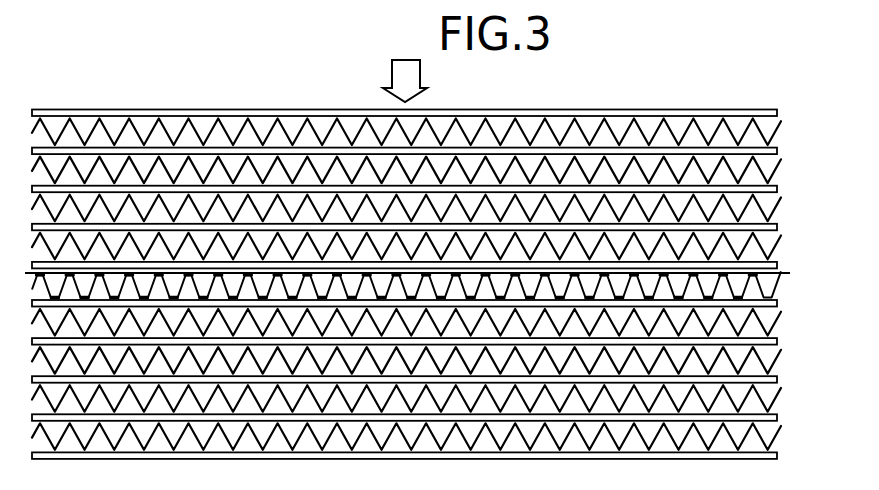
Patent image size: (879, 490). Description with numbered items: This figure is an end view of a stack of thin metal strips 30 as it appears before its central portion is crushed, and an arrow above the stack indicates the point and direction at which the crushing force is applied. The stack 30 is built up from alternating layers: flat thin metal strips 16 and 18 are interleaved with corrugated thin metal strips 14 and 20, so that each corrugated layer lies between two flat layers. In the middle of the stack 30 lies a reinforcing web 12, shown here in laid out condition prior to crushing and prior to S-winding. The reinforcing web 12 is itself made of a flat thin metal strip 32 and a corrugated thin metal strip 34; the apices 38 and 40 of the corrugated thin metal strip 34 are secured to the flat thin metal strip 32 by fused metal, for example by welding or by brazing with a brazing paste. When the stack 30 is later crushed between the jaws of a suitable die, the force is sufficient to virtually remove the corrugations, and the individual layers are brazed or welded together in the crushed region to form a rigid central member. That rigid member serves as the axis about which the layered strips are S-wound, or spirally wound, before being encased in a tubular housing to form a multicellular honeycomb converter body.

The stack of thin metal strips 30 is at (519, 98).
The flat thin metal strip 16 is at (277, 115).
The corrugated thin metal strip 14 is at (198, 127).
The flat thin metal strip 18 is at (340, 152).
The corrugated thin metal strip 20 is at (108, 167).
The reinforcing web 12 is at (812, 263).
The flat thin metal strip 32 is at (522, 270).
The apex 38 is at (593, 260).
The apex 40 is at (615, 271).
The corrugated thin metal strip 34 is at (758, 308).